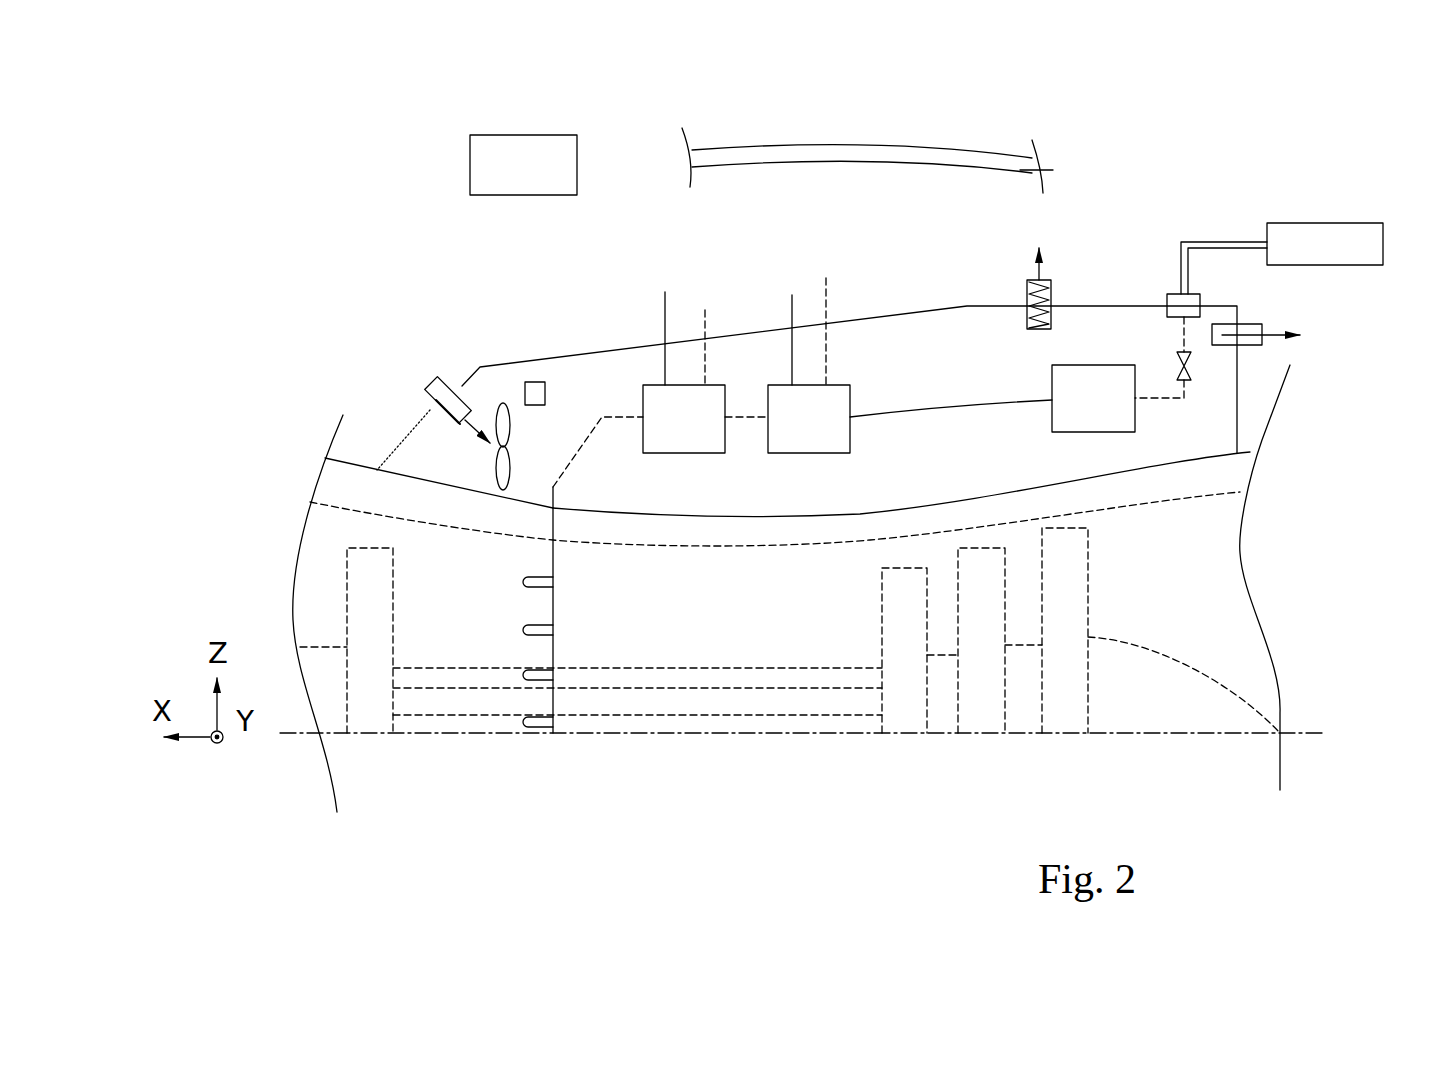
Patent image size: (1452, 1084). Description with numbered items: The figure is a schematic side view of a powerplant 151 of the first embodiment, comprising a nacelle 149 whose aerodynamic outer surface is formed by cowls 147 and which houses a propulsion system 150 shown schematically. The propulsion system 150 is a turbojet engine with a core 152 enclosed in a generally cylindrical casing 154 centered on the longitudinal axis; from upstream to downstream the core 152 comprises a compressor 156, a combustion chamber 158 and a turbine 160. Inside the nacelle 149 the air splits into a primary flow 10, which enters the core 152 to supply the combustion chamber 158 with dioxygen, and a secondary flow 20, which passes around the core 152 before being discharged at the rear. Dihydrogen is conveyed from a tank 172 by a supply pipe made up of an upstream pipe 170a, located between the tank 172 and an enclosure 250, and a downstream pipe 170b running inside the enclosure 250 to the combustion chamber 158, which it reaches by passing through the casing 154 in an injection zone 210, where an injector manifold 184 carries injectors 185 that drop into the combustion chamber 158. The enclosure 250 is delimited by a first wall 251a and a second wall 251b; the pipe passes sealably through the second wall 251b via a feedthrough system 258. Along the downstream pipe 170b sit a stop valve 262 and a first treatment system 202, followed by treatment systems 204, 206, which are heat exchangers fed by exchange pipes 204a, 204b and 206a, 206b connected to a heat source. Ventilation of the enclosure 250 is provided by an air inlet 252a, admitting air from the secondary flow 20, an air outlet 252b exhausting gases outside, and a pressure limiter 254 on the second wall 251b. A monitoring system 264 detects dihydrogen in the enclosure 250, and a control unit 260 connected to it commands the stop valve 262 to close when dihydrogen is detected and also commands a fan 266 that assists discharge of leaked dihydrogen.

The primary flow 10 is at (260, 603).
The secondary flow 20 is at (315, 242).
The cowls 147 is at (910, 152).
The nacelle 149 is at (1053, 170).
The propulsion system 150 is at (270, 425).
The powerplant 151 is at (307, 327).
The core 152 is at (1275, 619).
The casing 154 is at (1240, 472).
The compressor 156 is at (370, 715).
The combustion chamber 158 is at (637, 658).
The turbine 160 is at (905, 718).
The upstream pipe 170a is at (1223, 247).
The downstream pipe 170b is at (945, 410).
The dihydrogen tank 172 is at (1325, 244).
The injector manifold 184 is at (553, 640).
The injectors 185 is at (533, 725).
The first treatment system 202 is at (1093, 398).
The treatment system 204 is at (809, 419).
The exchange pipe 204a is at (792, 310).
The exchange pipe 204b is at (826, 293).
The treatment system 206 is at (684, 419).
The exchange pipe 206a is at (665, 308).
The exchange pipe 206b is at (705, 310).
The injection zone 210 is at (553, 508).
The enclosure 250 is at (497, 282).
The first wall 251a is at (772, 528).
The second wall 251b is at (933, 310).
The air inlet 252a is at (447, 383).
The air outlet 252b is at (1265, 347).
The pressure limiter 254 is at (1051, 292).
The feedthrough system 258 is at (1193, 300).
The control unit 260 is at (523, 165).
The stop valve 262 is at (1186, 370).
The monitoring system 264 is at (535, 393).
The fan 266 is at (500, 463).